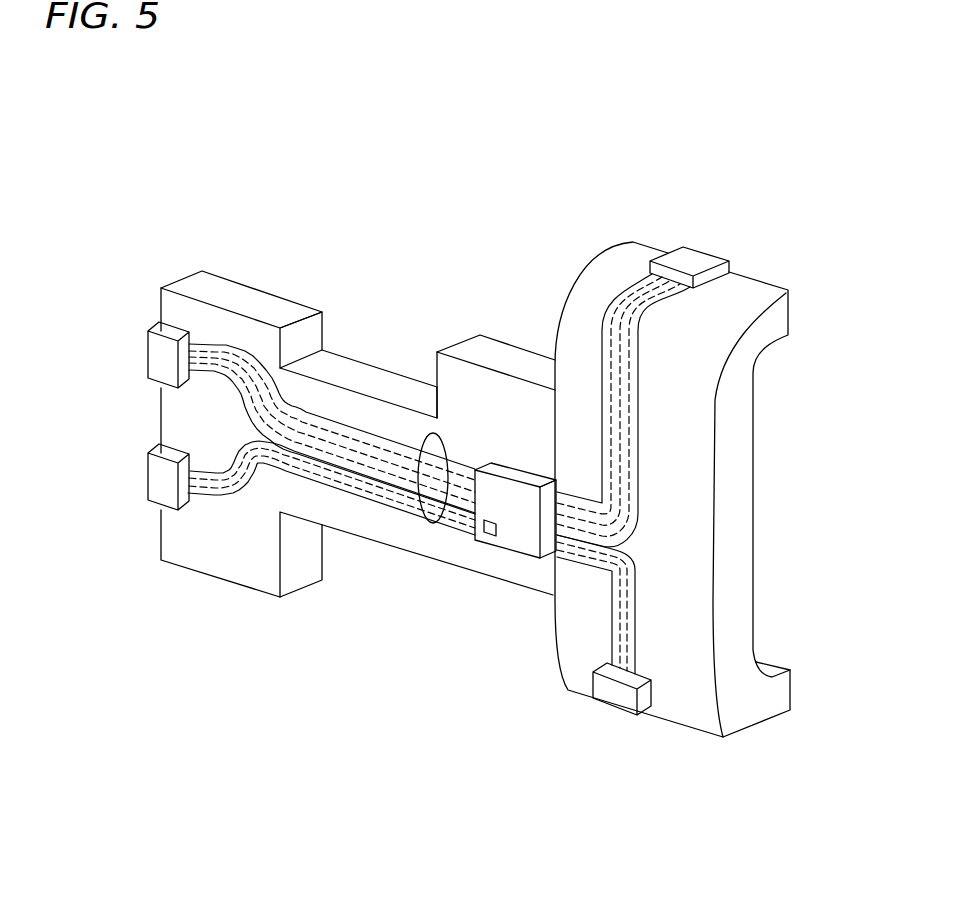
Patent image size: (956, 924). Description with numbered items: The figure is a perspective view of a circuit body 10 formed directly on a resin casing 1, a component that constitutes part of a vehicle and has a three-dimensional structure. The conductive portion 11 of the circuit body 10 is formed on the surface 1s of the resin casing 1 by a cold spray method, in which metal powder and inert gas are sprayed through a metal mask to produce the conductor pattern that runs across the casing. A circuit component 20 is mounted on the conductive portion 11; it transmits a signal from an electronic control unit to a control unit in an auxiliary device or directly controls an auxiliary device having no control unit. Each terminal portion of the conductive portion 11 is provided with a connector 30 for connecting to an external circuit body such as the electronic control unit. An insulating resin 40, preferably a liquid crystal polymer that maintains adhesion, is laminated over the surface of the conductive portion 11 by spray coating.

The resin casing 1 is at (516, 362).
The surface 1s is at (459, 385).
The circuit body 10 is at (668, 497).
The conductive portion 11 is at (420, 524).
The circuit component 20 is at (518, 536).
The connector 30 is at (160, 357).
The insulating resin 40 is at (368, 437).